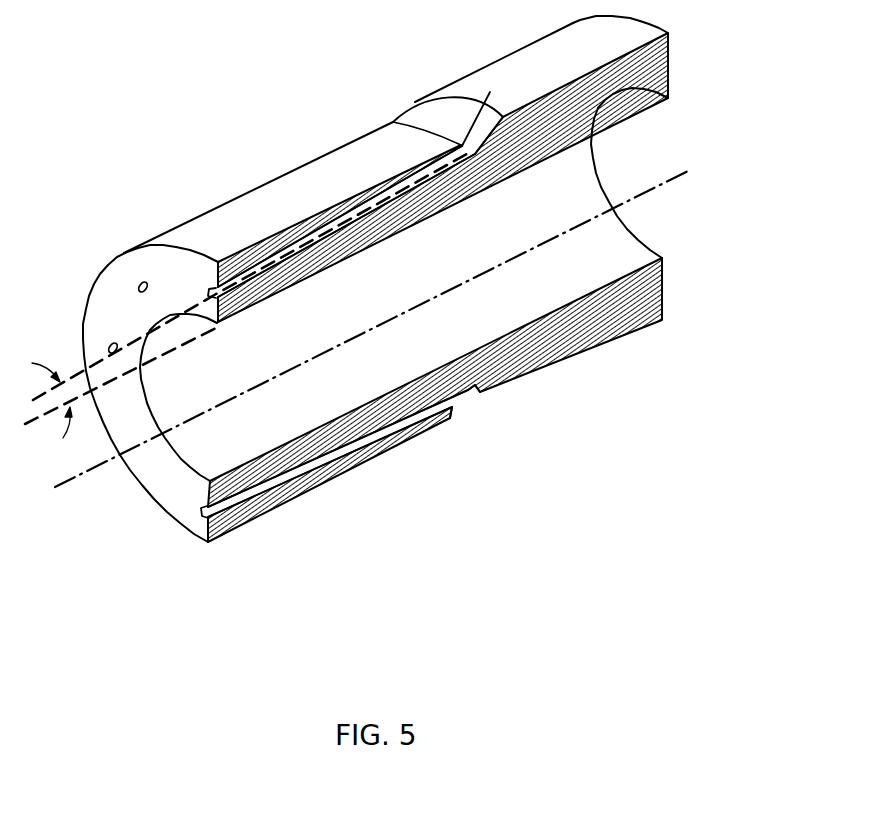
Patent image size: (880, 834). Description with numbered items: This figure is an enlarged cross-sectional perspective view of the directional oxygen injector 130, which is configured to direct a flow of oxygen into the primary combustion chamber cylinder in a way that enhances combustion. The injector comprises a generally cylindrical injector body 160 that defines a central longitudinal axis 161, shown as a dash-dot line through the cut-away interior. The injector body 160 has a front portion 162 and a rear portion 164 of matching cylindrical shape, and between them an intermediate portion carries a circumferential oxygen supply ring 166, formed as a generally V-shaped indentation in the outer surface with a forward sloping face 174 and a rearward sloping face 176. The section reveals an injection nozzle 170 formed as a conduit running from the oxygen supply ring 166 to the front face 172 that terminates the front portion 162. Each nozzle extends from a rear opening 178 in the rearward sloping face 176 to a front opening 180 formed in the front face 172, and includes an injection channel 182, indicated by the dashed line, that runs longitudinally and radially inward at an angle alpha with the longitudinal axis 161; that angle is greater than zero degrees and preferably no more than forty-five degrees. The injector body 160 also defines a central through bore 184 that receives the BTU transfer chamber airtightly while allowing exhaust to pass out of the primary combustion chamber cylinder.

The directional oxygen injector 130 is at (203, 48).
The injector body 160 is at (226, 189).
The longitudinal axis 161 is at (647, 186).
The front portion 162 is at (203, 213).
The rear portion 164 is at (526, 47).
The oxygen supply ring 166 is at (424, 115).
The injection nozzle 170 is at (320, 223).
The front face 172 is at (162, 485).
The forward sloping face 174 is at (463, 113).
The rearward sloping face 176 is at (476, 389).
The rear opening 178 is at (490, 96).
The front opening 180 is at (137, 286).
The injection channel 182 is at (363, 193).
The central through bore 184 is at (634, 146).